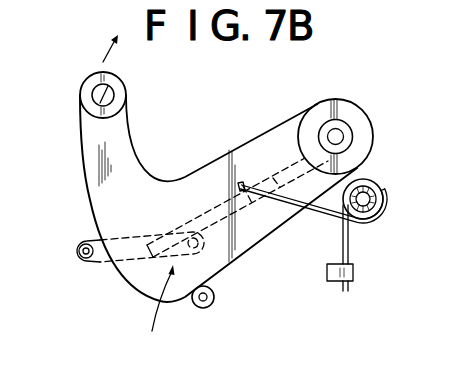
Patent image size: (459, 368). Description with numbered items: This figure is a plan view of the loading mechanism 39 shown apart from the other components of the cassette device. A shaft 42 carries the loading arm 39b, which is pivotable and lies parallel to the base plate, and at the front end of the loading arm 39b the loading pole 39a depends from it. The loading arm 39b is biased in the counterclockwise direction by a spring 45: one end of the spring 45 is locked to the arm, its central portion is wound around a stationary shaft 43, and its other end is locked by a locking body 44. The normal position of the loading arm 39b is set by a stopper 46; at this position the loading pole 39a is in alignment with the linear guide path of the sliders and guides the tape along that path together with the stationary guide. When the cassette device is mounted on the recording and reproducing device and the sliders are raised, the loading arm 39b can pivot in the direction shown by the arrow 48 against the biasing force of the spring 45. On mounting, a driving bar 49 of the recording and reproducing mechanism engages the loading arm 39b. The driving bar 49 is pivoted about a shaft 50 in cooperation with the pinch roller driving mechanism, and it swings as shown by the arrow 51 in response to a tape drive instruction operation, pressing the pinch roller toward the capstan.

The loading mechanism 39 is at (91, 137).
The loading pole 39a is at (114, 92).
The loading arm 39b is at (97, 172).
The shaft 42 is at (344, 139).
The stationary shaft 43 is at (383, 208).
The locking body 44 is at (326, 274).
The spring 45 is at (305, 208).
The stopper 46 is at (214, 303).
The arrow 48 is at (105, 56).
The driving bar 49 is at (100, 265).
The shaft 50 is at (82, 242).
The arrow 51 is at (160, 315).